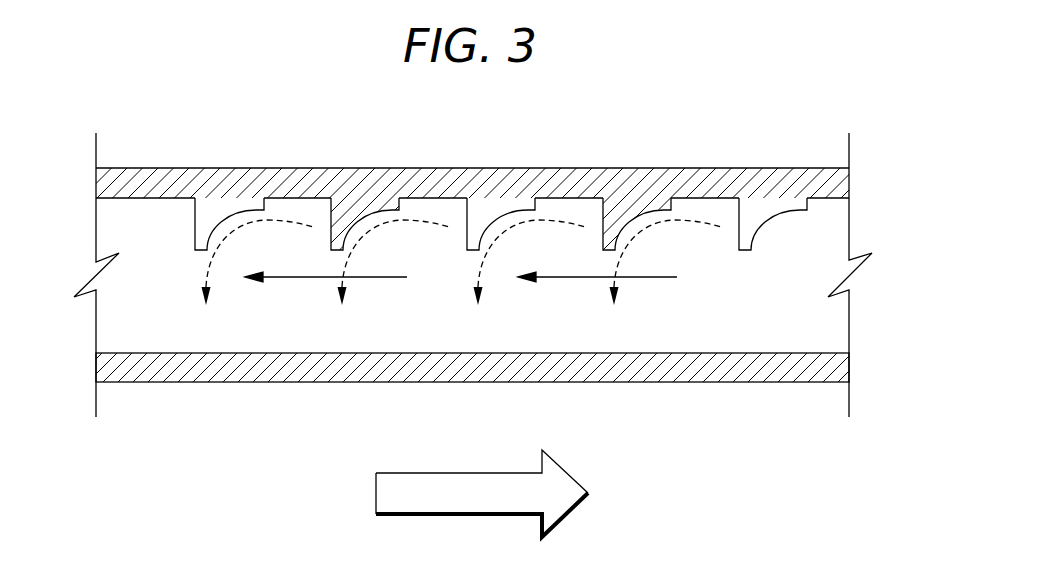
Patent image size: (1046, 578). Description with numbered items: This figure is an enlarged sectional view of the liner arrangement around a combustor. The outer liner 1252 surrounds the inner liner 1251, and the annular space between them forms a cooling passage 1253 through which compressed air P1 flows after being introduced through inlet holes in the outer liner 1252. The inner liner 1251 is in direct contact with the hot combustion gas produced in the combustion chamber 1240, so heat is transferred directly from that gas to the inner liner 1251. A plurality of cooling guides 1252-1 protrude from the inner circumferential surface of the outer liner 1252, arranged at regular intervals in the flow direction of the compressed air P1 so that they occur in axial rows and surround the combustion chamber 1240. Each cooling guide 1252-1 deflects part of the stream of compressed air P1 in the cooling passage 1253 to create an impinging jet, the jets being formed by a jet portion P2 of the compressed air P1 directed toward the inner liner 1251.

The combustion chamber 1240 is at (263, 417).
The inner liner 1251 is at (650, 372).
The outer liner 1252 is at (756, 178).
The cooling guide 1252-1 is at (223, 212).
The cooling passage 1253 is at (752, 305).
The compressed air P1 is at (565, 277).
The jet portion P2 is at (557, 222).